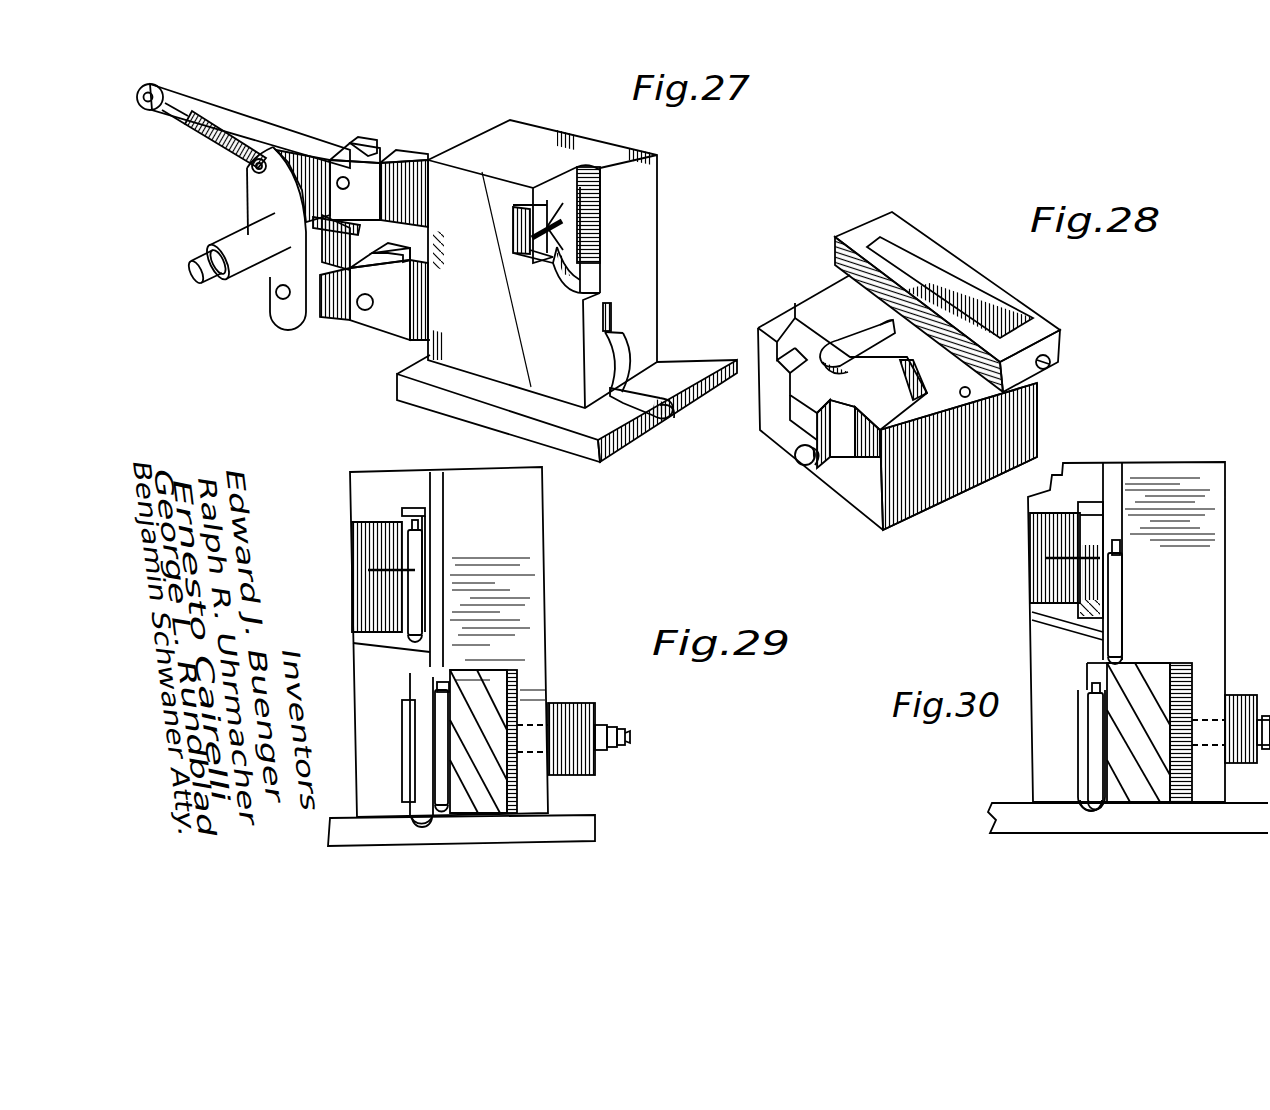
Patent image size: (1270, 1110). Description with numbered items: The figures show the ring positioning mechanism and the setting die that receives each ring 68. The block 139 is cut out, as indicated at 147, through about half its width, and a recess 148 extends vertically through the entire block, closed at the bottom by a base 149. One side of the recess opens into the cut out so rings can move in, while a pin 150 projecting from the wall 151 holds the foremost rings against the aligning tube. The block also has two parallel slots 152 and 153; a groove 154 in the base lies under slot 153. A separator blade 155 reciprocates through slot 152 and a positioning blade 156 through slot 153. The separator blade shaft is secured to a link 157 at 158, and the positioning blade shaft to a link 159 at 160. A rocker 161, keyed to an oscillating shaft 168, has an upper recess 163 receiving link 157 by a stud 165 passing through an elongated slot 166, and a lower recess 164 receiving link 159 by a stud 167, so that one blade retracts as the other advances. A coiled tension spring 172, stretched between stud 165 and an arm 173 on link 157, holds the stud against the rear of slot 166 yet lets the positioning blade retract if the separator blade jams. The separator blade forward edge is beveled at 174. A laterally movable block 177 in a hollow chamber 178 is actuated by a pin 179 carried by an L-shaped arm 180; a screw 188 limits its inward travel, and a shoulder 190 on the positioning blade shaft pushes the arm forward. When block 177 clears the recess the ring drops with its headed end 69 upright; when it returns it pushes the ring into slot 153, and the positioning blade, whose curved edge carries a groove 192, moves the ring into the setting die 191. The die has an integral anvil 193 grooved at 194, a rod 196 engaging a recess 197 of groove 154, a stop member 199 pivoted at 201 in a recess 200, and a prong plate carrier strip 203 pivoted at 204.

In FIG. 29, the ring 68 is at (425, 548).
In FIG. 30, the ring 68 is at (1124, 586).
In FIG. 29, the headed end of the ring 69 is at (443, 681).
In FIG. 27, the block 139 is at (645, 188).
In FIG. 29, the block 139 is at (528, 514).
In FIG. 30, the block 139 is at (1201, 467).
In FIG. 27, the cut out 147 is at (537, 264).
In FIG. 29, the cut out 147 is at (360, 622).
In FIG. 30, the cut out 147 is at (1040, 614).
In FIG. 29, the recess 148 is at (445, 485).
In FIG. 30, the recess 148 is at (1124, 500).
In FIG. 27, the base 149 is at (667, 347).
In FIG. 29, the base 149 is at (597, 823).
In FIG. 30, the base 149 is at (1000, 810).
In FIG. 27, the pin 150 is at (531, 240).
In FIG. 29, the pin 150 is at (372, 563).
In FIG. 30, the pin 150 is at (1045, 558).
In FIG. 27, the wall 151 is at (540, 204).
In FIG. 27, the slot 152 is at (570, 188).
In FIG. 29, the slot 152 is at (410, 510).
In FIG. 30, the slot 152 is at (1108, 614).
In FIG. 27, the slot 153 is at (614, 308).
In FIG. 29, the slot 153 is at (418, 683).
In FIG. 30, the slot 153 is at (1094, 673).
In FIG. 27, the groove 154 is at (641, 400).
In FIG. 29, the groove 154 is at (427, 825).
In FIG. 30, the groove 154 is at (1088, 807).
In FIG. 27, the separator blade 155 is at (410, 160).
In FIG. 27, the positioning blade 156 is at (603, 343).
In FIG. 27, the link 157 is at (316, 198).
In FIG. 27, the securing point of separator blade shaft 158 is at (362, 150).
In FIG. 27, the link 159 is at (331, 318).
In FIG. 27, the securing point of positioning blade shaft 160 is at (363, 312).
In FIG. 27, the rocker 161 is at (272, 274).
In FIG. 27, the recess in upper end of rocker 163 is at (360, 228).
In FIG. 27, the recess in lower end of rocker 164 is at (392, 254).
In FIG. 27, the stud 165 is at (251, 168).
In FIG. 27, the elongated slot 166 is at (343, 177).
In FIG. 27, the stud 167 is at (288, 305).
In FIG. 27, the shaft 168 is at (215, 280).
In FIG. 27, the coiled tension spring 172 is at (198, 135).
In FIG. 27, the arm 173 is at (247, 112).
In FIG. 30, the beveled forward edge 174 is at (1122, 560).
In FIG. 29, the laterally movable block 177 is at (490, 676).
In FIG. 30, the laterally movable block 177 is at (1143, 660).
In FIG. 29, the hollow chamber 178 is at (518, 682).
In FIG. 30, the hollow chamber 178 is at (1188, 662).
In FIG. 29, the pin 179 is at (565, 703).
In FIG. 30, the pin 179 is at (1175, 731).
In FIG. 29, the arm 180 is at (600, 712).
In FIG. 30, the arm 180 is at (1240, 697).
In FIG. 29, the screw 188 is at (630, 735).
In FIG. 27, the shoulder 190 is at (417, 338).
In FIG. 28, the setting die 191 is at (898, 525).
In FIG. 27, the groove 192 is at (626, 332).
In FIG. 28, the anvil 193 is at (853, 455).
In FIG. 28, the groove 194 is at (793, 397).
In FIG. 28, the rod 196 is at (806, 460).
In FIG. 27, the recess 197 is at (669, 417).
In FIG. 28, the stop member 199 is at (848, 340).
In FIG. 28, the recess 200 is at (903, 323).
In FIG. 28, the pivot of stop member 201 is at (964, 398).
In FIG. 28, the prong plate carrier strip 203 is at (855, 232).
In FIG. 28, the pivot of carrier strip 204 is at (1052, 361).